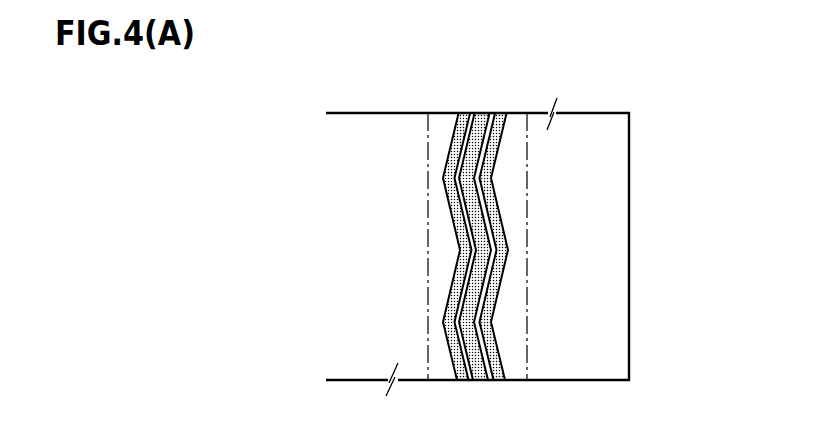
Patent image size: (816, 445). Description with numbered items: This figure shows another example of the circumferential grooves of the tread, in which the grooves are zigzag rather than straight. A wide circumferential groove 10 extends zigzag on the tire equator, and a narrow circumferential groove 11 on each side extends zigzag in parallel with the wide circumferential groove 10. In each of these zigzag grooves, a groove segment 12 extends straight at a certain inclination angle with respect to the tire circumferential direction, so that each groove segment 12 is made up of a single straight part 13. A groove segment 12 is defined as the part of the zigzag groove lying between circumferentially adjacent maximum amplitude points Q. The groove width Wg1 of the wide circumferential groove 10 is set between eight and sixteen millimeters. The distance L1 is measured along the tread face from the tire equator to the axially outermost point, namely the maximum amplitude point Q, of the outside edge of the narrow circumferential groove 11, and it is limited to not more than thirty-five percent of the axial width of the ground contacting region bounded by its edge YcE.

The wide circumferential groove 10 is at (484, 112).
The narrow circumferential groove 11 is at (463, 113).
The groove segment 12 is at (468, 213).
The straight part 13 is at (478, 246).
The maximum amplitude point Q is at (452, 181).
The ground contacting region edge YcE is at (428, 141).
The distance L1 is at (478, 118).
The groove width Wg1 is at (522, 398).